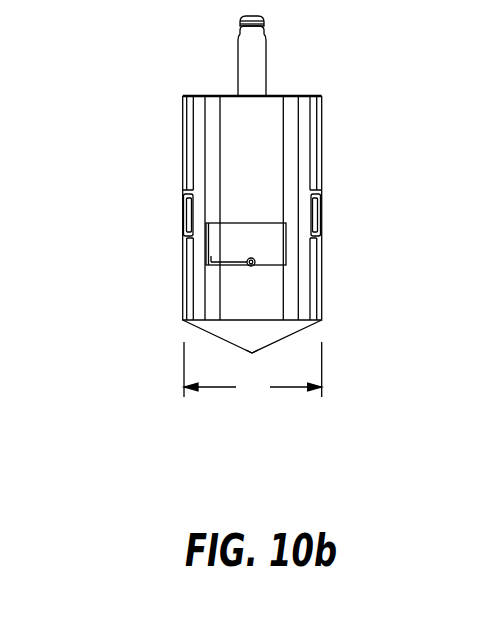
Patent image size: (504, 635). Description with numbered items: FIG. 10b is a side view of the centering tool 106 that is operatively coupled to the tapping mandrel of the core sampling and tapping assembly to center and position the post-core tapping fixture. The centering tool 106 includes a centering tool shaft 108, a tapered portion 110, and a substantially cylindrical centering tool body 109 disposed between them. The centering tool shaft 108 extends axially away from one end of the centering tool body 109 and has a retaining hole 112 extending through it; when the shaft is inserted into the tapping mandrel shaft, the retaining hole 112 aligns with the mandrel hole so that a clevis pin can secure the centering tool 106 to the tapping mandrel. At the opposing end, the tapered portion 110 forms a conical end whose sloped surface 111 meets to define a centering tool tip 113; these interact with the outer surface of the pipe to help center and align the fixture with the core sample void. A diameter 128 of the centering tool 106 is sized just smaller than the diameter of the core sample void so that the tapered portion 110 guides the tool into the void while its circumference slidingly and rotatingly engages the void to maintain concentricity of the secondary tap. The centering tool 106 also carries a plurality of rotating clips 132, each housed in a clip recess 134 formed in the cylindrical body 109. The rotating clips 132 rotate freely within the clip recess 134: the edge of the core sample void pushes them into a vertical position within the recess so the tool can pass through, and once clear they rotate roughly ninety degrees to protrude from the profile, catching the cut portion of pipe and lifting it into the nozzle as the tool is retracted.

The centering tool 106 is at (121, 115).
The centering tool shaft 108 is at (267, 67).
The retaining hole 112 is at (265, 33).
The centering tool body 109 is at (322, 143).
The rotating clips 132 is at (183, 222).
The clip recess 134 is at (183, 190).
The tapered portion 110 is at (292, 338).
The sloped surface 111 is at (207, 332).
The centering tool tip 113 is at (251, 354).
The diameter 128 is at (253, 370).